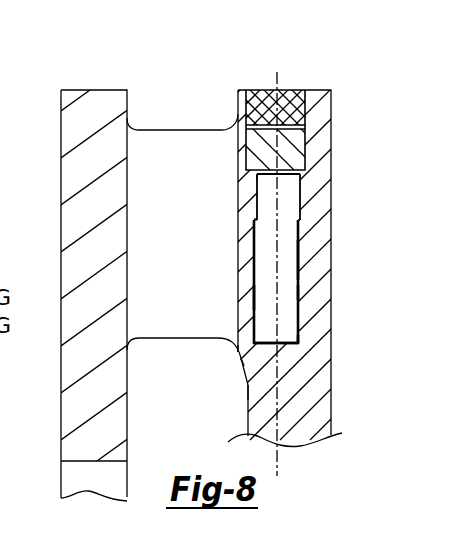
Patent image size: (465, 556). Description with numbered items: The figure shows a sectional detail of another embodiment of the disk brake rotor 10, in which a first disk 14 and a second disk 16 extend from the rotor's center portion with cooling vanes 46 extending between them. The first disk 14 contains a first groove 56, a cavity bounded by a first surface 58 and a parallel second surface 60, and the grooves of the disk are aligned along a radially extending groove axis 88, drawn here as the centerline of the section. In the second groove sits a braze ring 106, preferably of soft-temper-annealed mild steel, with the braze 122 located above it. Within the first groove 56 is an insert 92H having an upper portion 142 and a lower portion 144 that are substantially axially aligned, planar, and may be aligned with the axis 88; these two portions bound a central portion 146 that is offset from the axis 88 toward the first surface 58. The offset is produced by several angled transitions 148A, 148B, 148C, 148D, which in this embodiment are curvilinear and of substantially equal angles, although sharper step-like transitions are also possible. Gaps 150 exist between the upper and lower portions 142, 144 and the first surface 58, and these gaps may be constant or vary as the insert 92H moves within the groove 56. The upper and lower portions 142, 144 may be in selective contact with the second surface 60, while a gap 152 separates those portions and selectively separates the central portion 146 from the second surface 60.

The disk brake rotor 10 is at (76, 68).
The first disk 14 is at (294, 421).
The second disk 16 is at (62, 376).
The cooling vanes 46 is at (191, 266).
The first groove 56 is at (248, 388).
The first surface 58 is at (237, 352).
The second surface 60 is at (301, 346).
The groove axis 88 is at (275, 78).
The insert 92H is at (257, 218).
The braze ring 106 is at (257, 148).
The braze 122 is at (289, 96).
The upper portion 142 is at (292, 186).
The lower portion 144 is at (299, 343).
The central portion 146 is at (300, 327).
The angled transition 148A is at (256, 222).
The angled transition 148B is at (253, 298).
The angled transition 148C is at (288, 291).
The angled transition 148D is at (300, 221).
The gaps 150 is at (257, 174).
The gap 152 is at (298, 260).